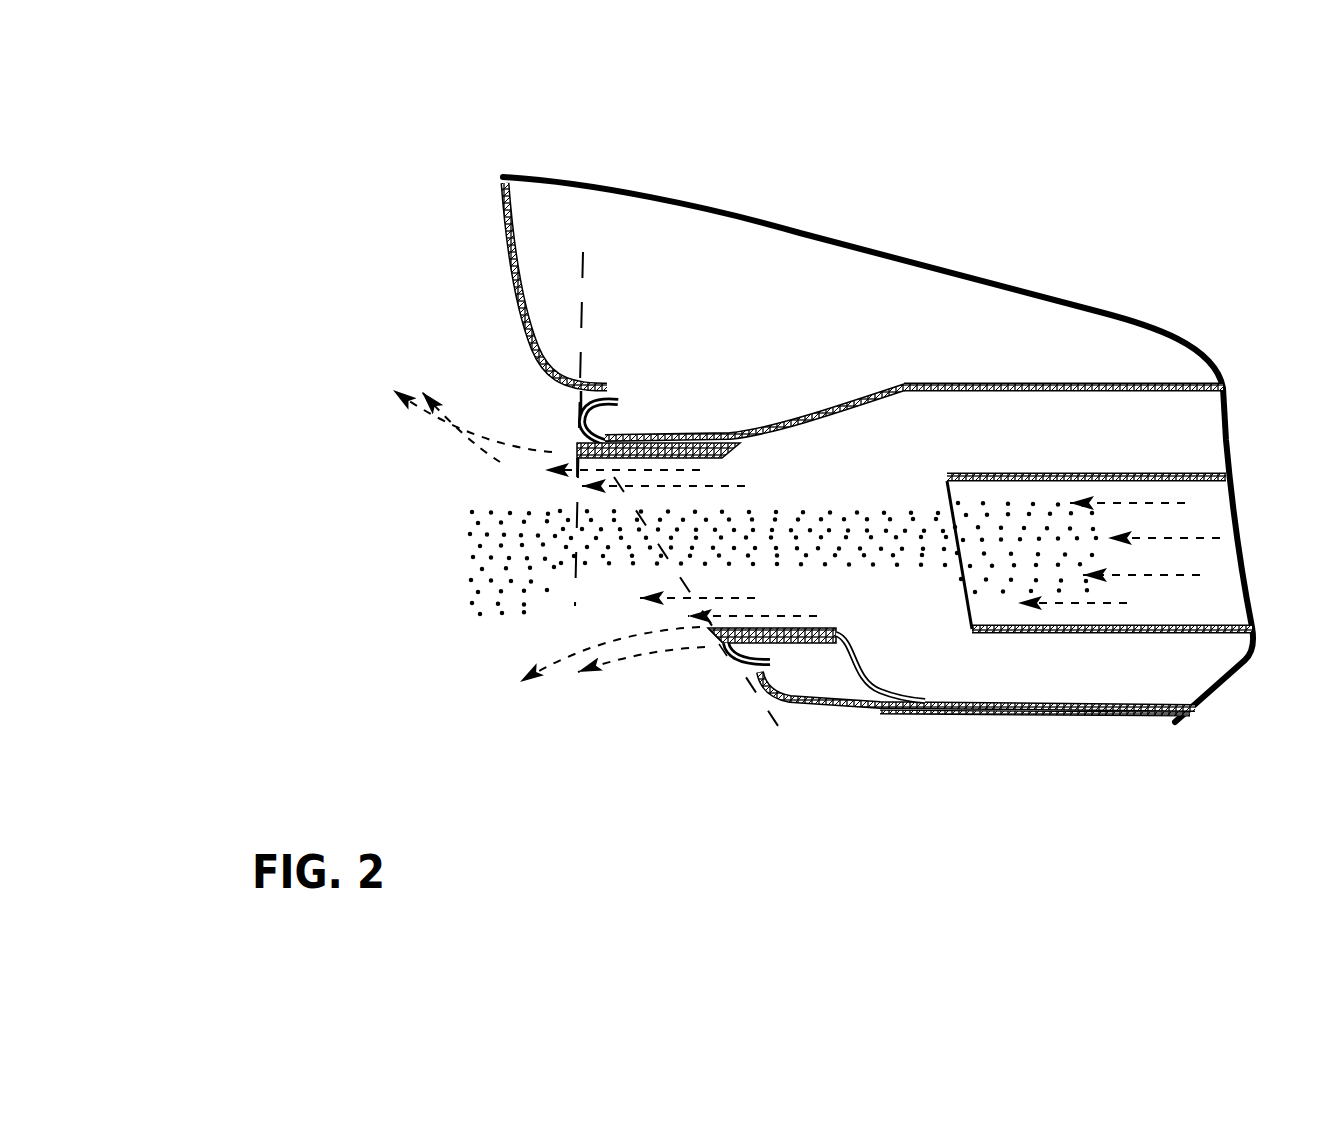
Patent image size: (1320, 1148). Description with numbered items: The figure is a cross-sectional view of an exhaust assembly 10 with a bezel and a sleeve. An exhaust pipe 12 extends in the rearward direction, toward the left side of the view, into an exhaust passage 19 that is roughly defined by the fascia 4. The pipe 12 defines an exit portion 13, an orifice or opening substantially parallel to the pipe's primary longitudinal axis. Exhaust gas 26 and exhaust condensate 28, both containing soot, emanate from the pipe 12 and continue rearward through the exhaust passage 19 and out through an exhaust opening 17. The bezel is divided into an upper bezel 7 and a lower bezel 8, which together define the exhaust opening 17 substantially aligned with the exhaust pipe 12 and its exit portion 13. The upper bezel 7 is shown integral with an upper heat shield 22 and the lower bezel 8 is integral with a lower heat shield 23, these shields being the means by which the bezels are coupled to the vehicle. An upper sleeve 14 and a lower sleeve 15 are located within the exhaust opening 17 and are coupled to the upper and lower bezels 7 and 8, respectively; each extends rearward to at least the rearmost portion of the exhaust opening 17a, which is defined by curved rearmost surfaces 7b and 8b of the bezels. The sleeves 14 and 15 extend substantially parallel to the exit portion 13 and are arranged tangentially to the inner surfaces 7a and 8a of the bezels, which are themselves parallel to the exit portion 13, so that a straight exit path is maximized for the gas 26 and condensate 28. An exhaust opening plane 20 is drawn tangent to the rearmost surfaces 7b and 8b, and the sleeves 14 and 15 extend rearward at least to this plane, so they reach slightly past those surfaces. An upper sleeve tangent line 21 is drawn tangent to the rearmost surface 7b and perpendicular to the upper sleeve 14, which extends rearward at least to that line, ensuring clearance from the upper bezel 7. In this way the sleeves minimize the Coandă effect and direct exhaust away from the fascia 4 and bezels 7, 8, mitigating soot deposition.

The fascia 4 is at (546, 358).
The upper bezel 7 is at (640, 405).
The inner surface of upper bezel 7a is at (664, 441).
The rearmost surface of upper bezel 7b is at (575, 428).
The lower bezel 8 is at (730, 652).
The inner surface of lower bezel 8a is at (797, 640).
The rearmost surface of lower bezel 8b is at (727, 647).
The exhaust assembly 10 is at (1229, 723).
The exhaust pipe 12 is at (1167, 477).
The exit portion 13 is at (955, 550).
The upper sleeve 14 is at (703, 441).
The lower sleeve 15 is at (728, 638).
The exhaust opening 17 is at (663, 493).
The rearmost portion of exhaust opening 17a is at (722, 588).
The exhaust passage 19 is at (923, 667).
The exhaust opening plane 20 is at (786, 732).
The upper sleeve tangent line 21 is at (581, 259).
The upper heat shield 22 is at (903, 383).
The lower heat shield 23 is at (1067, 715).
The exhaust gas 26 is at (500, 443).
The exhaust condensate 28 is at (1022, 533).